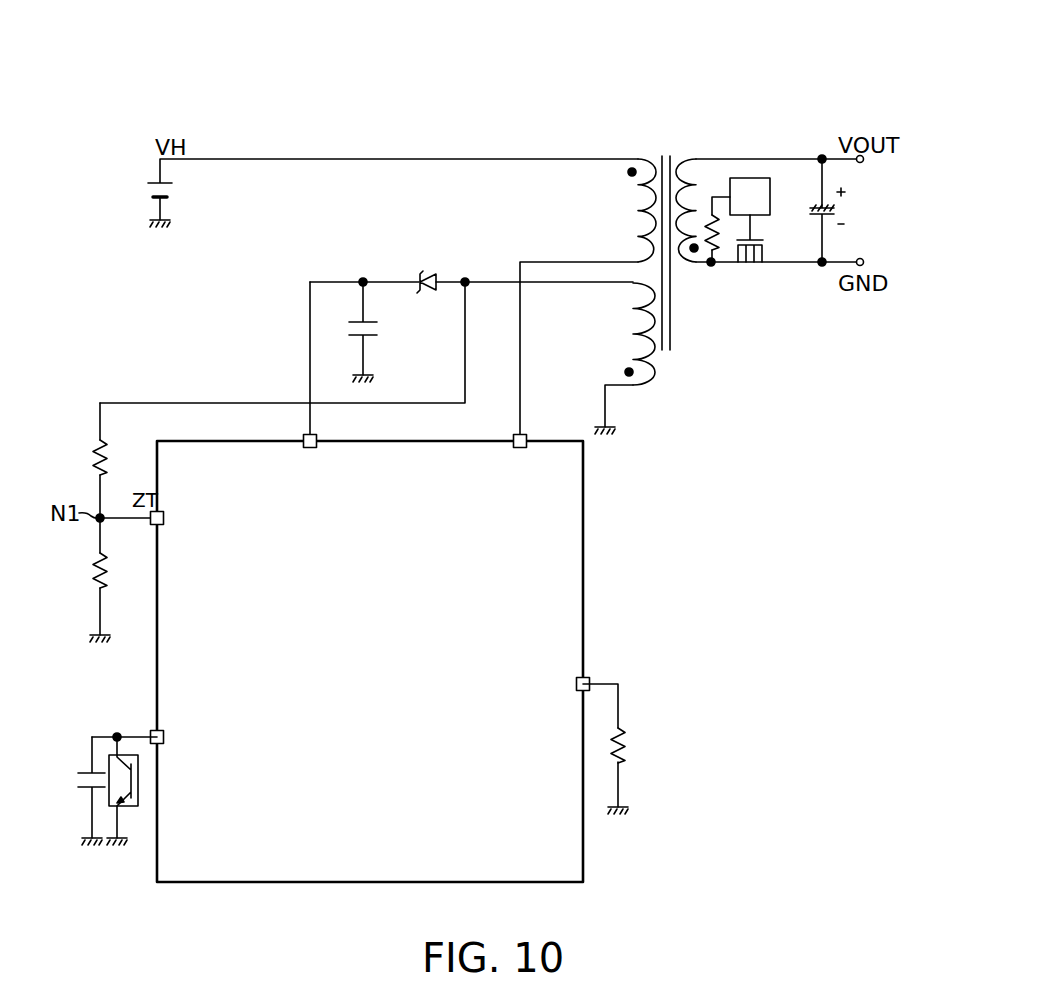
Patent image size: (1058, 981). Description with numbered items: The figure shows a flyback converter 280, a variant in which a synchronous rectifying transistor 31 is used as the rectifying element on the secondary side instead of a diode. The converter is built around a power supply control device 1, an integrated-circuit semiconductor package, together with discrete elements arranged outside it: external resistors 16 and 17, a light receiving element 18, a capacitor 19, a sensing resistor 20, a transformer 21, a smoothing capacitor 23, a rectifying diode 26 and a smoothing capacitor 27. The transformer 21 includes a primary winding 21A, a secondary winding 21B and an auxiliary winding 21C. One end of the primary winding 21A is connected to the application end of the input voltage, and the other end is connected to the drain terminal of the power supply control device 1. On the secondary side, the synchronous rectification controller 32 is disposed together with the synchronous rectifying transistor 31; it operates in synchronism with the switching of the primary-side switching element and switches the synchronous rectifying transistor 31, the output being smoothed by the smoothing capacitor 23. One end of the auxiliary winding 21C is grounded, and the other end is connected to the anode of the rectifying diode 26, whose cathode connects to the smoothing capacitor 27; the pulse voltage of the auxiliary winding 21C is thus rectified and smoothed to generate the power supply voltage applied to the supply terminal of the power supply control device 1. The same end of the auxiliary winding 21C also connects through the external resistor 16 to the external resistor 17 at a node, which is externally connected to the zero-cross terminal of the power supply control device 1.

The flyback converter 280 is at (775, 56).
The power supply control device 1 is at (558, 438).
The transformer 21 is at (663, 150).
The primary winding 21A is at (639, 197).
The secondary winding 21B is at (689, 200).
The auxiliary winding 21C is at (632, 345).
The smoothing capacitor 23 is at (834, 212).
The synchronous rectifying transistor 31 is at (750, 268).
The synchronous rectification controller 32 is at (770, 190).
The rectifying diode 26 is at (425, 290).
The smoothing capacitor 27 is at (378, 328).
The external resistor 16 is at (95, 460).
The external resistor 17 is at (95, 567).
The light receiving element 18 is at (139, 800).
The capacitor 19 is at (78, 780).
The sensing resistor 20 is at (628, 745).